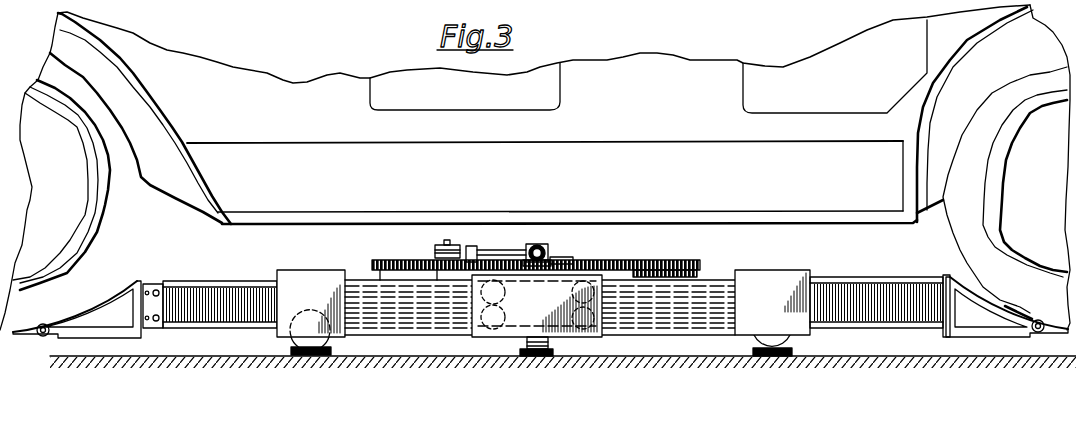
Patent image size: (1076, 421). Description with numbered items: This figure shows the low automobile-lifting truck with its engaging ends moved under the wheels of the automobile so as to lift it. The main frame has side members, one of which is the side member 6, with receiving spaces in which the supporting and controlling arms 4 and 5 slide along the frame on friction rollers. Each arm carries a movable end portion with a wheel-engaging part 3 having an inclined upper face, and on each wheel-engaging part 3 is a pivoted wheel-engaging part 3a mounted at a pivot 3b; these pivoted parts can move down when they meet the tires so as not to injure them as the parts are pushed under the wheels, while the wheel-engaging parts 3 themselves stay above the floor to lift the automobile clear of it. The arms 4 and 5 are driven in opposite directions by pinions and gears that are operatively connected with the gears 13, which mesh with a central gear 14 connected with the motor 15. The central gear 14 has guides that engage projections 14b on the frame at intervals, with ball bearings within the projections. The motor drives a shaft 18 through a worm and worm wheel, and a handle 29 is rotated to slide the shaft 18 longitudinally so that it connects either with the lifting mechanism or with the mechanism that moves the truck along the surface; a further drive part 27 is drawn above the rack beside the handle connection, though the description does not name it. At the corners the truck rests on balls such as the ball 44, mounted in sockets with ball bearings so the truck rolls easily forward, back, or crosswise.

The wheel-engaging parts 3 is at (105, 295).
The pivoted wheel-engaging parts 3a is at (1045, 322).
The pivot 3b is at (43, 324).
The supporting and controlling arm 4 is at (247, 287).
The supporting and controlling arm 5 is at (841, 283).
The side member 6 is at (542, 294).
The gear 13 is at (543, 300).
The central gear 14 is at (654, 260).
The projections 14b is at (692, 262).
The motor 15 is at (573, 257).
The shaft 18 is at (451, 243).
The pinion motor 27 is at (538, 245).
The handle 29 is at (506, 252).
The ball 44 is at (333, 343).